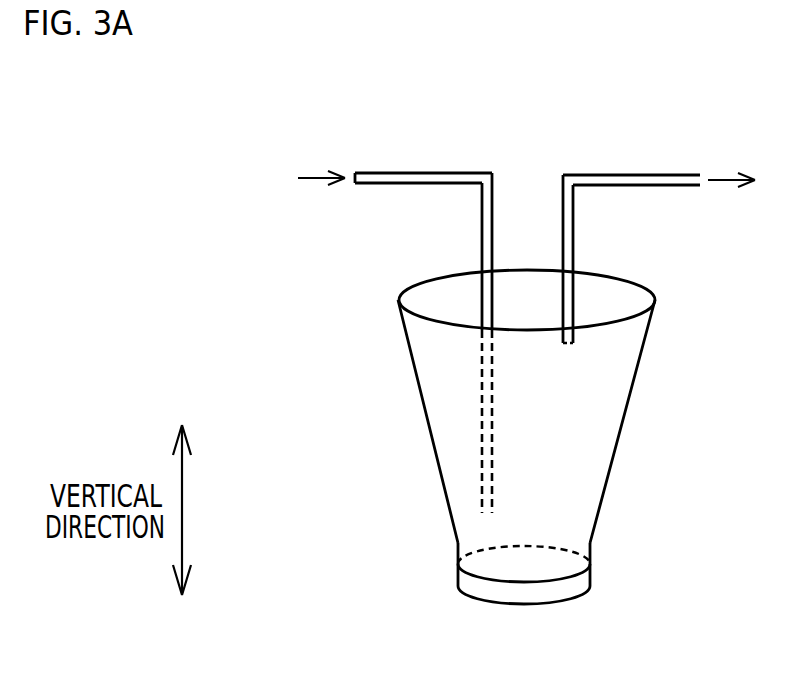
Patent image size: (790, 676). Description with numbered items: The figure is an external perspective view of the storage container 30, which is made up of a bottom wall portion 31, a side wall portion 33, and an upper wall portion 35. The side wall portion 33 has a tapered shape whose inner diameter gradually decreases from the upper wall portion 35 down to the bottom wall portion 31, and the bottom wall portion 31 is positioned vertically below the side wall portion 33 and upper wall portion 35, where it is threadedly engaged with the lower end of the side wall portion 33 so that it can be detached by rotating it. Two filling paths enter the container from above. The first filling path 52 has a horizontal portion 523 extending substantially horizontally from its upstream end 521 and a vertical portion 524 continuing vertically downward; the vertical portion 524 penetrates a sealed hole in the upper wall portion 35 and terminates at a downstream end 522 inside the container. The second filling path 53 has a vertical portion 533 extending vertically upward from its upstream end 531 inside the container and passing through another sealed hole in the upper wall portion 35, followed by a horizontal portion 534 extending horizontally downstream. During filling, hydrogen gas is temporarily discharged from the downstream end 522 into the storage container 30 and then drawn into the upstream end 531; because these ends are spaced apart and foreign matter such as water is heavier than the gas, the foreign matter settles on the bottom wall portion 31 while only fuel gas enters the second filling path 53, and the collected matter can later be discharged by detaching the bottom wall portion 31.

The storage container 30 is at (541, 449).
The bottom wall portion 31 is at (462, 592).
The side wall portion 33 is at (617, 453).
The upper wall portion 35 is at (410, 292).
The first filling path 52 is at (388, 296).
The upstream end 521 is at (354, 178).
The downstream end 522 is at (478, 490).
The horizontal portion 523 is at (382, 184).
The vertical portion 524 is at (481, 236).
The second filling path 53 is at (655, 238).
The upstream end 531 is at (573, 343).
The vertical portion 533 is at (574, 238).
The horizontal portion 534 is at (664, 175).